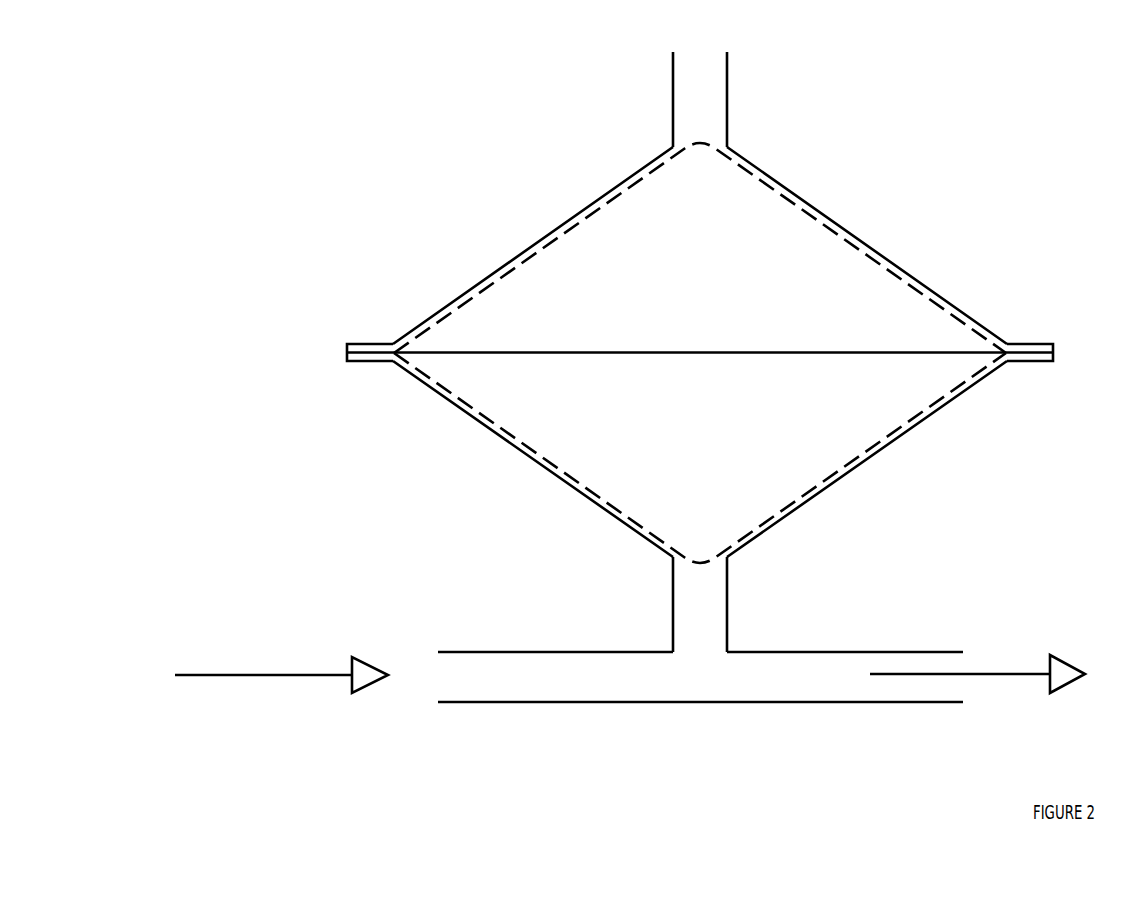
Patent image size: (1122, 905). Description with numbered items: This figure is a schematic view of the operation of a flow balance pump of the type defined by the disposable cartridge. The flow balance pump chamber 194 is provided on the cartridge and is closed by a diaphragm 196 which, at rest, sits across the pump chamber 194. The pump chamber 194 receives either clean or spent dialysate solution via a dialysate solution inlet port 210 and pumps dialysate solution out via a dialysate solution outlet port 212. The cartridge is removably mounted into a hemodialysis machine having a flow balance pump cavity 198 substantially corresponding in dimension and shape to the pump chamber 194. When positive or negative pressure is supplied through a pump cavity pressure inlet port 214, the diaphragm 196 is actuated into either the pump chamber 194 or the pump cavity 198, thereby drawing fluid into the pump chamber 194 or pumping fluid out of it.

The flow balance pump chamber 194 is at (873, 397).
The diaphragm 196 is at (753, 177).
The flow balance pump cavity 198 is at (873, 310).
The dialysate solution inlet port 210 is at (512, 682).
The dialysate solution outlet port 212 is at (846, 680).
The pump cavity pressure inlet port 214 is at (690, 92).